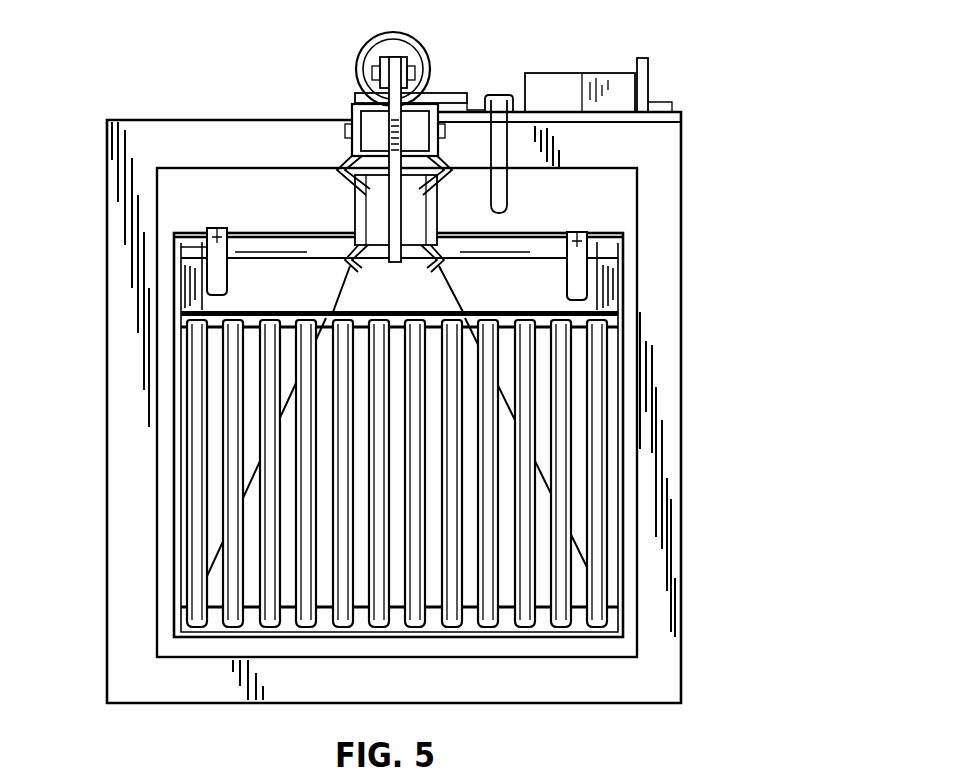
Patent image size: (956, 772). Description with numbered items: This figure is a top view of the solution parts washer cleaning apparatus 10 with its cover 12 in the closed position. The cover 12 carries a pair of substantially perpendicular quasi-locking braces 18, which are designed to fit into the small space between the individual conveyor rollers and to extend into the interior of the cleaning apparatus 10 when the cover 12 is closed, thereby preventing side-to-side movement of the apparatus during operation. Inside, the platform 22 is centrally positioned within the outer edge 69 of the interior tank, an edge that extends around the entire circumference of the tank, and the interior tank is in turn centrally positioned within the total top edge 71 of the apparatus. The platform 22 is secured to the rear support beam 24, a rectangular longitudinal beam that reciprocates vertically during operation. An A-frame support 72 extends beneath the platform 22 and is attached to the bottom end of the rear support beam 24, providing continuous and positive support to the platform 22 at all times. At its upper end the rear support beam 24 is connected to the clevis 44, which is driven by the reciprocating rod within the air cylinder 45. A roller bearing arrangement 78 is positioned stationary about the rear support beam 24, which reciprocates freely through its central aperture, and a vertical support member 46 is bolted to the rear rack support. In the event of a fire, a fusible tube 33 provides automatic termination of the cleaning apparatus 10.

The cleaning apparatus 10 is at (416, 354).
The cover 12 is at (608, 286).
The quasi-locking braces 18 is at (217, 238).
The platform 22 is at (215, 425).
The rear support beam 24 is at (412, 222).
The fusible tube 33 is at (497, 96).
The clevis 44 is at (394, 200).
The air cylinder 45 is at (422, 44).
The vertical support member 46 is at (352, 112).
The top lip or edge 69 is at (658, 626).
The top edge 71 is at (658, 150).
The A-frame support 72 is at (463, 300).
The roller bearing arrangement 78 is at (440, 197).